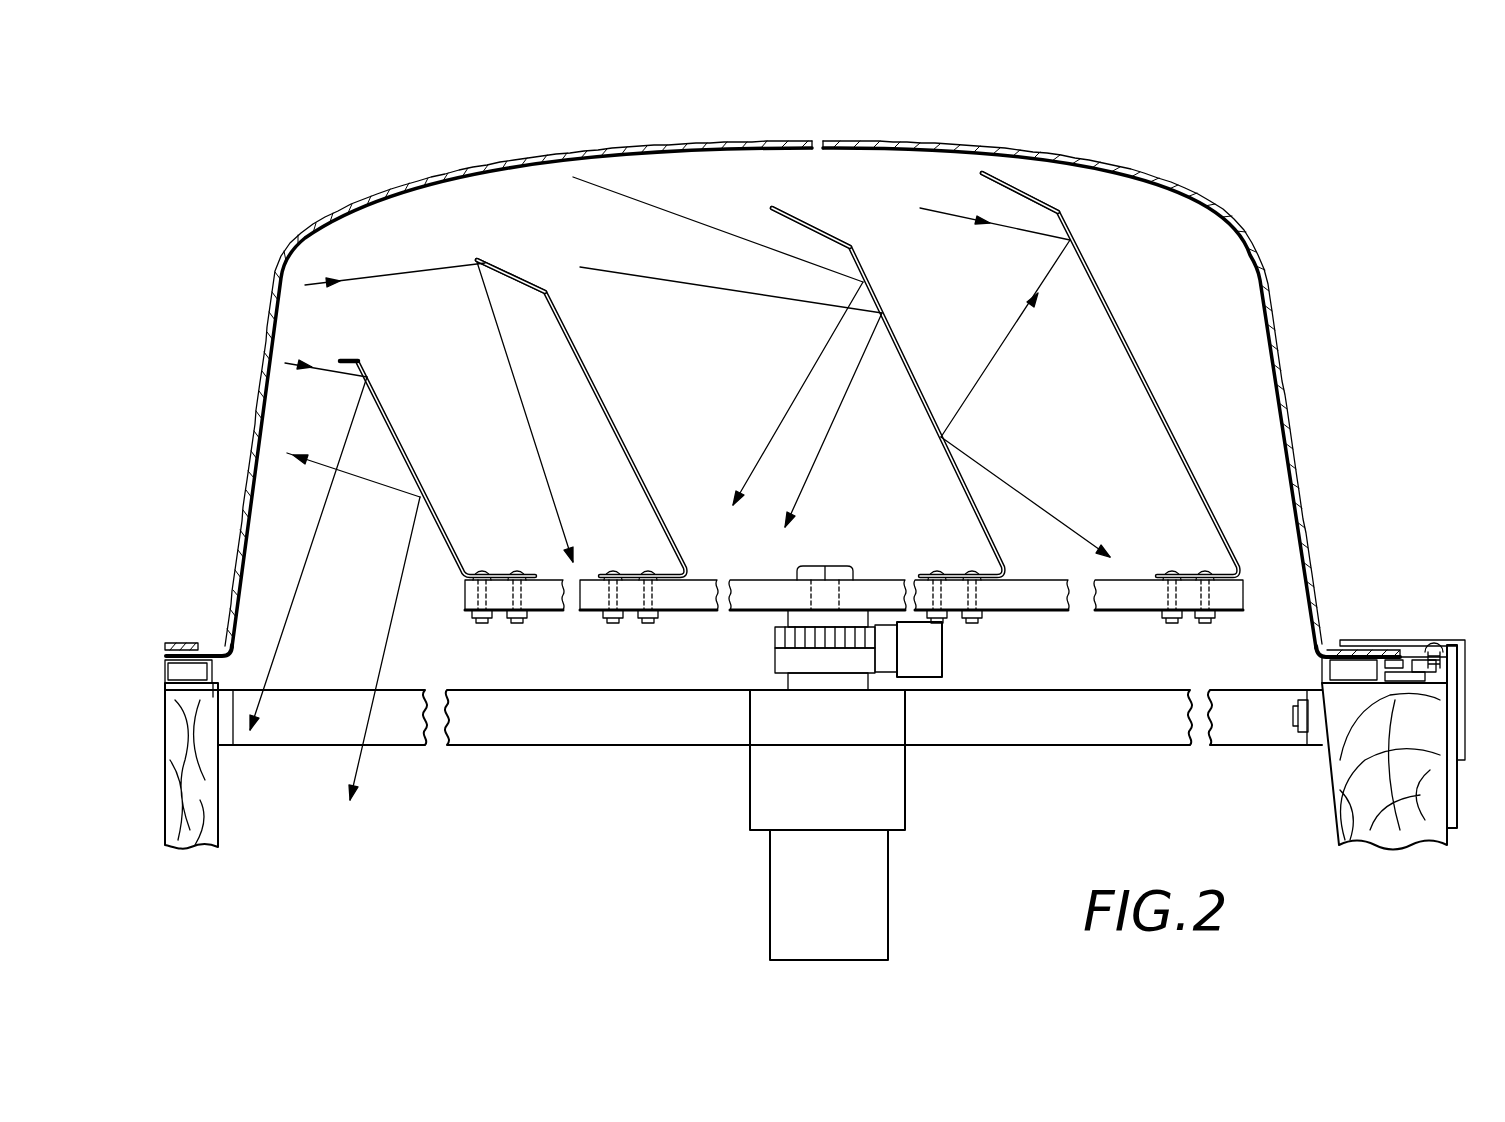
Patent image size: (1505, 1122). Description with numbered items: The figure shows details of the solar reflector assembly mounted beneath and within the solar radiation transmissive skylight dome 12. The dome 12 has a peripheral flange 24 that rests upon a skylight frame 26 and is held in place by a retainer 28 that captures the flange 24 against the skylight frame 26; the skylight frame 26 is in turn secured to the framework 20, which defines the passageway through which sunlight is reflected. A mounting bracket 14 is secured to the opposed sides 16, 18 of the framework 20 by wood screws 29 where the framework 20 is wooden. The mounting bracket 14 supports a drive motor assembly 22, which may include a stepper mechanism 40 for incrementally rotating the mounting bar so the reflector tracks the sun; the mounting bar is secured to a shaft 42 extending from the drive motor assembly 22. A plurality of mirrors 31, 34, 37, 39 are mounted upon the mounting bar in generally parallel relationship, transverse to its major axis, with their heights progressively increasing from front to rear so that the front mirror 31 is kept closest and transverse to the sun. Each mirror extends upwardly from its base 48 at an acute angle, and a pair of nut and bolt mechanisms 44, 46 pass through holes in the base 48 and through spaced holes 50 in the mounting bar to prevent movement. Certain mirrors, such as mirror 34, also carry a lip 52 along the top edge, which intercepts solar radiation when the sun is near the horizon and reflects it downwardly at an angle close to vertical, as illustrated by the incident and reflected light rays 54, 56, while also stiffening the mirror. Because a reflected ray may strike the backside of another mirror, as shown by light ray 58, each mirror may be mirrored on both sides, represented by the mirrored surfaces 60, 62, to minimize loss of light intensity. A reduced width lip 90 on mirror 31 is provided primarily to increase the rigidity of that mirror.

The dome 12 is at (1110, 168).
The mounting bracket 14 is at (1012, 746).
The side of framework 16 is at (220, 808).
The side of framework 18 is at (1322, 815).
The framework 20 is at (1432, 820).
The drive motor assembly 22 is at (906, 805).
The peripheral flange 24 is at (212, 647).
The skylight frame 26 is at (212, 676).
The retainer 28 is at (178, 643).
The wood screws 29 is at (1297, 715).
The mirror 31 is at (423, 494).
The mirror 34 is at (645, 487).
The mirror 37 is at (996, 552).
The mirror 39 is at (1182, 452).
The stepper mechanism 40 is at (942, 652).
The shaft 42 is at (832, 592).
The nut and bolt mechanism 44 is at (477, 575).
The nut and bolt mechanism 46 is at (514, 575).
The base 48 is at (498, 572).
The holes 50 is at (478, 612).
The lip 52 is at (519, 281).
The incident light ray 54 is at (412, 274).
The reflected light ray 56 is at (533, 437).
The light ray 58 is at (1022, 232).
The mirrored surface 60 is at (375, 395).
The mirrored surface 62 is at (400, 454).
The reduced width lip 90 is at (344, 359).